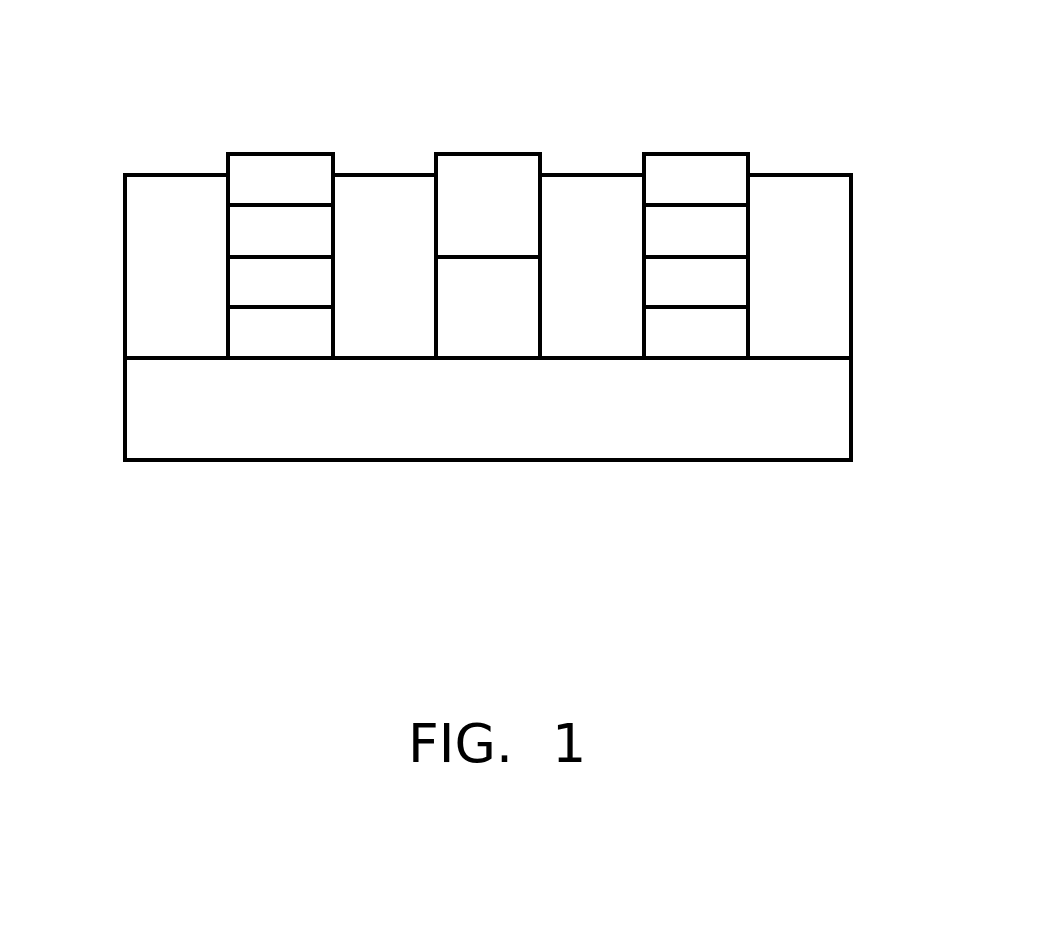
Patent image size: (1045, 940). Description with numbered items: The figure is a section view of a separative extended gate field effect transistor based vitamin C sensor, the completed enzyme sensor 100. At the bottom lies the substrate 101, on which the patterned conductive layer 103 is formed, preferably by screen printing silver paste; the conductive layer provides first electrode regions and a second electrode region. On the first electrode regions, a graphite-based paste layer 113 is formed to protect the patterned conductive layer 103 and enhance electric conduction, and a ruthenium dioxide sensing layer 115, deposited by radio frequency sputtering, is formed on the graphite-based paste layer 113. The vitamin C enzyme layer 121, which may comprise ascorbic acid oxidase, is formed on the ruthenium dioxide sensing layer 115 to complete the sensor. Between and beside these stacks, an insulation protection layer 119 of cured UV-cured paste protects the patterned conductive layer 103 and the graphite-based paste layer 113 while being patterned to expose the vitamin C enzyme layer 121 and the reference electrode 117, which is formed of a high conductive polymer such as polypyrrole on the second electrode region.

The enzyme sensor 100 is at (486, 287).
The substrate 101 is at (838, 408).
The patterned conductive layer 103 is at (280, 347).
The graphite-based paste layer 113 is at (243, 276).
The ruthenium dioxide sensing layer 115 is at (257, 222).
The reference electrode 117 is at (488, 170).
The insulation protection layer 119 is at (138, 268).
The vitamin C enzyme layer 121 is at (305, 172).